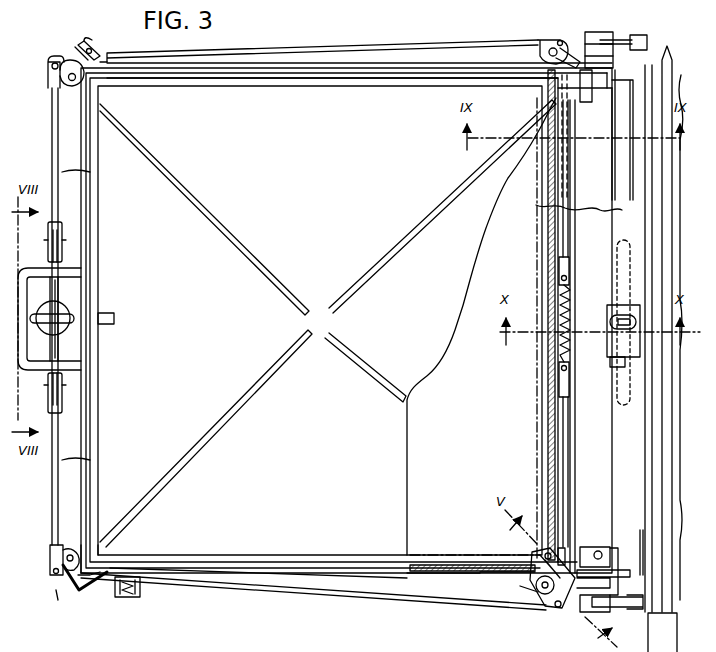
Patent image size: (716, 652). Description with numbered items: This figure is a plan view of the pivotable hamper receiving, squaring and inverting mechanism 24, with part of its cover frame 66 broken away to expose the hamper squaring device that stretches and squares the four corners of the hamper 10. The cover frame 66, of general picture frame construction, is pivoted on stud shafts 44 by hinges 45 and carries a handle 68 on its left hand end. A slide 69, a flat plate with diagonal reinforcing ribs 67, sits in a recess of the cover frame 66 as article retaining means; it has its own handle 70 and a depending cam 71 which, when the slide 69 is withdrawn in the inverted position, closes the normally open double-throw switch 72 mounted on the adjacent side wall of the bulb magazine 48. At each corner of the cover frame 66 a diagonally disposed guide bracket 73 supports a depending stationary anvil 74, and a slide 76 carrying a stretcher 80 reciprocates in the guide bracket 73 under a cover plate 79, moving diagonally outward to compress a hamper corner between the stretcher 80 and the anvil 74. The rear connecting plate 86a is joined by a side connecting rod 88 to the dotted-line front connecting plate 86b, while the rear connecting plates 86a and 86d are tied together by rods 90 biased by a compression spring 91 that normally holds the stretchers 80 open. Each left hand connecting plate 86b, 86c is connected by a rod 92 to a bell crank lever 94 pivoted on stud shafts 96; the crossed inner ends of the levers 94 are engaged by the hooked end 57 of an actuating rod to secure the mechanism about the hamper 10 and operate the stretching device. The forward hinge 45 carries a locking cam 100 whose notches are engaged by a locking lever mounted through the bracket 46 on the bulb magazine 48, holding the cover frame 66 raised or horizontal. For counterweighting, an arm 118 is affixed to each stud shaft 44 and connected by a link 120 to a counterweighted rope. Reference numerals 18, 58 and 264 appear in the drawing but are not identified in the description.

The hamper 10 is at (536, 396).
The lower sill/track 18 is at (593, 632).
The hamper receiving, squaring and inverting mechanism 24 is at (250, 588).
The stud shafts 44 is at (582, 40).
The hinges 45 is at (618, 568).
The bracket 46 is at (665, 62).
The bulb magazine 48 is at (660, 430).
The hooked end 57 is at (68, 313).
The cross bar 58 is at (72, 326).
The cover frame 66 is at (288, 74).
The diagonal reinforcing ribs 67 is at (285, 300).
The handle 68 is at (72, 366).
The slide 69 is at (345, 105).
The handle 70 is at (616, 268).
The depending cam 71 is at (116, 318).
The double-throw switch 72 is at (620, 338).
The guide bracket 73 is at (94, 54).
The stationary anvil 74 is at (505, 574).
The slide 76 is at (548, 563).
The cover plate 79 is at (68, 96).
The stretcher 80 is at (520, 560).
The rear connecting plate 86a is at (548, 596).
The front connecting plate 86b is at (90, 556).
The left hand connecting plate 86c is at (102, 95).
The rear connecting plate 86d is at (535, 78).
The side connecting rod 88 is at (306, 620).
The rods 90 is at (565, 238).
The compression spring 91 is at (570, 310).
The rod 92 is at (90, 172).
The bell crank lever 94 is at (60, 292).
The stud shafts 96 is at (48, 262).
The locking cam 100 is at (618, 598).
The arm 118 is at (628, 40).
The link 120 is at (642, 34).
The channel bracket 264 is at (663, 163).